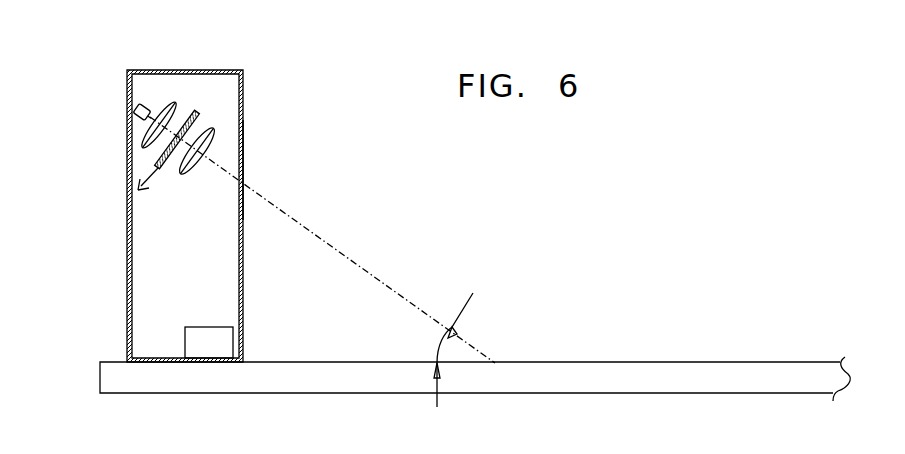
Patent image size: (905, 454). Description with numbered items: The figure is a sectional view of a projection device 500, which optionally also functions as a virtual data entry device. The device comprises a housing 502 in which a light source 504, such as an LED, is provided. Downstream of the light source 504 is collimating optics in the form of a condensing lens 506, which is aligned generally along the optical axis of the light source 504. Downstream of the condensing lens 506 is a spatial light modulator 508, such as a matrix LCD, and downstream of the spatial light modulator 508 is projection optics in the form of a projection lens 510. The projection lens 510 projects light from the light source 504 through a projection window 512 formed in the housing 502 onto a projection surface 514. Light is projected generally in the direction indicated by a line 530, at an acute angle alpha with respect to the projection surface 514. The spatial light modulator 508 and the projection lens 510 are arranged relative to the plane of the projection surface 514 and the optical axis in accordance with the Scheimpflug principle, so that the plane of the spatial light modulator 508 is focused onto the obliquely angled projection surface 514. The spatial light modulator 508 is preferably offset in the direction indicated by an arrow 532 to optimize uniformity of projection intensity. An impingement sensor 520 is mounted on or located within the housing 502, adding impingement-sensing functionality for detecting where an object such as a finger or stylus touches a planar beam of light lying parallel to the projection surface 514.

The projection device 500 is at (110, 72).
The housing 502 is at (128, 214).
The light source 504 is at (148, 110).
The condensing lens 506 is at (177, 103).
The spatial light modulator 508 is at (200, 113).
The projection lens 510 is at (213, 133).
The projection window 512 is at (246, 178).
The projection surface 514 is at (737, 362).
The impingement sensor 520 is at (198, 337).
The line 530 is at (357, 262).
The arrow 532 is at (155, 176).